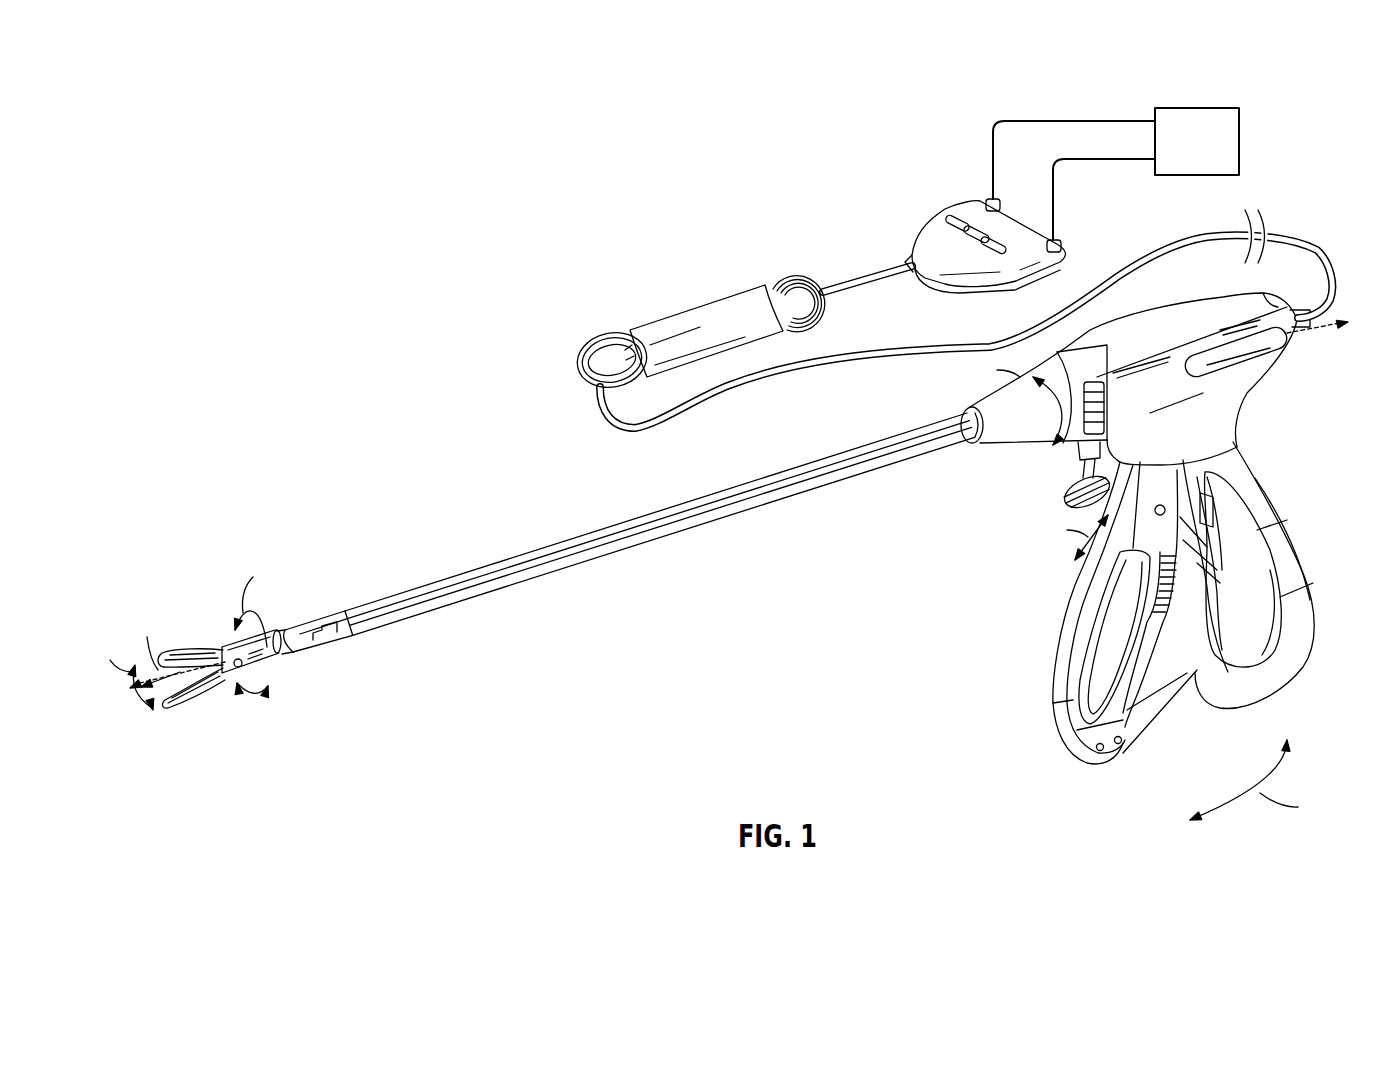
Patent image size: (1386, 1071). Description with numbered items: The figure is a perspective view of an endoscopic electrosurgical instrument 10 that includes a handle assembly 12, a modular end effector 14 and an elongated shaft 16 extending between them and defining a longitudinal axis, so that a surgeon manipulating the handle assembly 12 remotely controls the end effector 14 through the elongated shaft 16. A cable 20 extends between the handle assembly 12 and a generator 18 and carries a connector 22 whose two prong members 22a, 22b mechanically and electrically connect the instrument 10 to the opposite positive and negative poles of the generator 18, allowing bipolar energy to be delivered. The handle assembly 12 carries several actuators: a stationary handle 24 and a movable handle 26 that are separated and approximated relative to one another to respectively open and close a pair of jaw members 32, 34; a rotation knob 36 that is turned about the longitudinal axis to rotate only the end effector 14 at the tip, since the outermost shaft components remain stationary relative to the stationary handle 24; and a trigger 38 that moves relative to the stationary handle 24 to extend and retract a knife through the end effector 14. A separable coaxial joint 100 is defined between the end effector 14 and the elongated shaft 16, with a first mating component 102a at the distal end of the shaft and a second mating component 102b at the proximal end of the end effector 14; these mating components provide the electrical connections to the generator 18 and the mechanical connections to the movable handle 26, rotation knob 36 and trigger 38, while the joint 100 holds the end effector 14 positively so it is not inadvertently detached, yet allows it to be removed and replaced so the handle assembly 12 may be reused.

The electrosurgical instrument 10 is at (450, 312).
The handle assembly 12 is at (1318, 672).
The modular end effector 14 is at (225, 715).
The elongated shaft 16 is at (653, 533).
The generator 18 is at (1213, 107).
The cable 20 is at (1330, 270).
The connector 22 is at (1012, 207).
The prong member 22a is at (993, 193).
The prong member 22b is at (1060, 243).
The stationary handle 24 is at (1253, 687).
The movable handle 26 is at (1107, 748).
The jaw member 32 is at (173, 650).
The jaw member 34 is at (178, 713).
The rotation knob 36 is at (1097, 380).
The trigger 38 is at (1062, 502).
The separable coaxial joint 100 is at (330, 560).
The first mating component 102a is at (327, 620).
The second mating component 102b is at (307, 648).